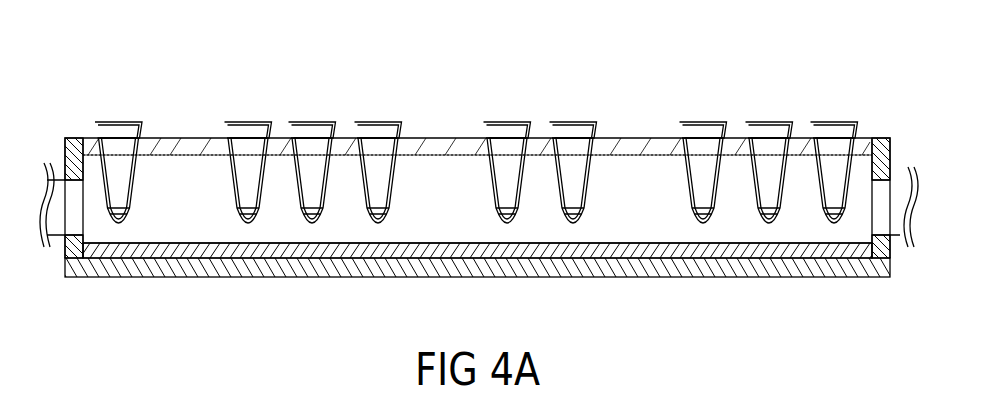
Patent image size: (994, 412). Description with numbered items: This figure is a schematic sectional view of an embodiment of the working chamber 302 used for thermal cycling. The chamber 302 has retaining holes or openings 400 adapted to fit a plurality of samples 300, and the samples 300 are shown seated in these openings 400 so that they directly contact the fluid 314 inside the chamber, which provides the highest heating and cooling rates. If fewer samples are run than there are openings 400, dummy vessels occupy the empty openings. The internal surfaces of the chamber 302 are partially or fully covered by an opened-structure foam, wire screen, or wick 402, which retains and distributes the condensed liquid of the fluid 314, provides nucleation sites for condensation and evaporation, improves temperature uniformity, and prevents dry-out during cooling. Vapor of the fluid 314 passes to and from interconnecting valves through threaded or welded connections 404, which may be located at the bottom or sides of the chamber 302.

The samples 300 is at (117, 138).
The working chamber 302 is at (288, 258).
The fluid 314 is at (545, 233).
The retaining holes or openings 400 is at (438, 145).
The wick 402 is at (758, 250).
The connections 404 is at (55, 200).